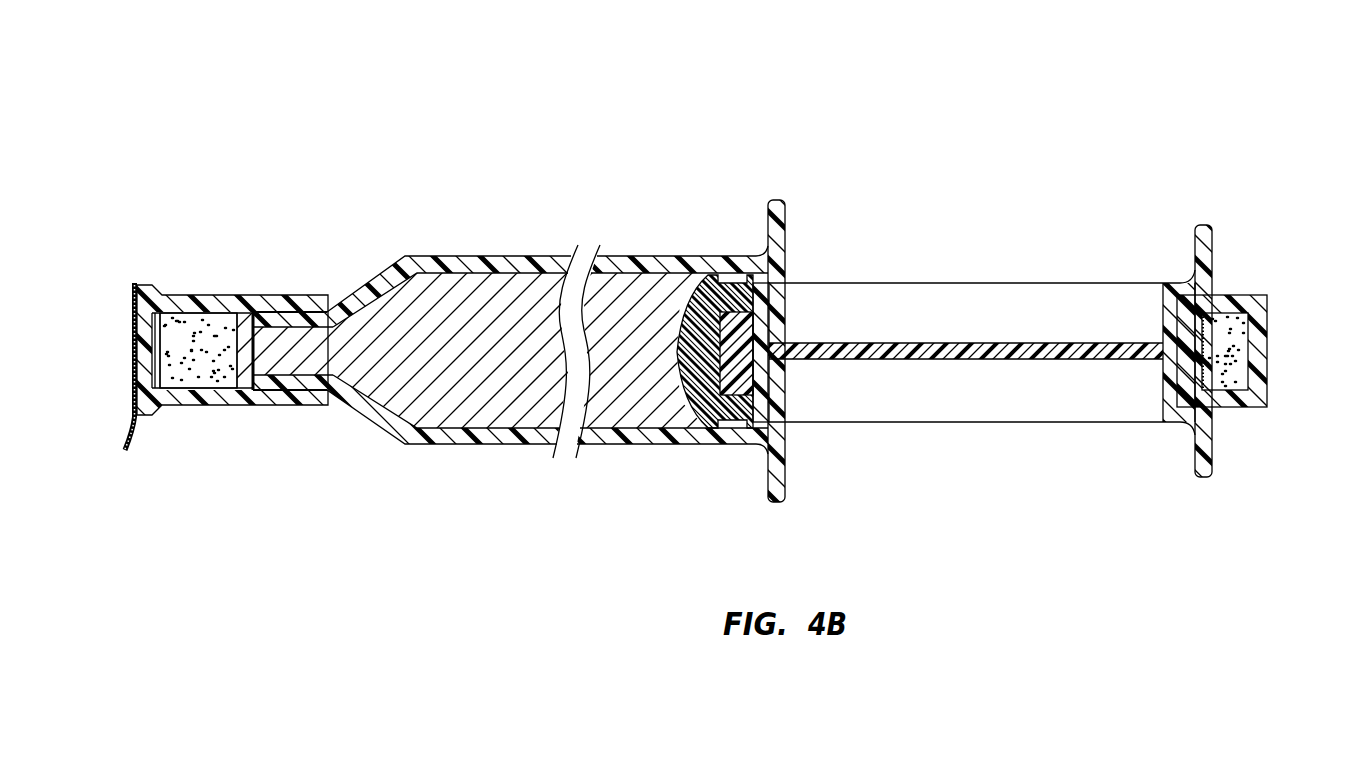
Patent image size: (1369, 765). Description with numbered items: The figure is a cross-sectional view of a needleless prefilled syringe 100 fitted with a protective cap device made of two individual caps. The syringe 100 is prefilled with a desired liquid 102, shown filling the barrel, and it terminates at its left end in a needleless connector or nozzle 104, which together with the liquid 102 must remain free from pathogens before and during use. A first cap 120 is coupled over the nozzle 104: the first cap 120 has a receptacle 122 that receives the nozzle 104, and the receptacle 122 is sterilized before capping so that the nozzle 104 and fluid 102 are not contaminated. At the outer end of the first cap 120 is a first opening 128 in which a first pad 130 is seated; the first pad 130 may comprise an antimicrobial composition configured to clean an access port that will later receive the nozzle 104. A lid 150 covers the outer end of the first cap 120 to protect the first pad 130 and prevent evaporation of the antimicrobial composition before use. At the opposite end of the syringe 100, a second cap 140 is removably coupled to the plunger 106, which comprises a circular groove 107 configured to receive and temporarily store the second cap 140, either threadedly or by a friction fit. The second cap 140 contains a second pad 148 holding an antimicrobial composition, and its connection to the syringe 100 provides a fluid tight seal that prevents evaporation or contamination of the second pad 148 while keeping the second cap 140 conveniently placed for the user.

The prefilled syringe 100 is at (785, 222).
The liquid 102 is at (484, 300).
The nozzle 104 is at (287, 383).
The plunger 106 is at (1213, 260).
The circular groove 107 is at (1165, 400).
The first cap 120 is at (227, 308).
The receptacle 122 is at (283, 325).
The first opening 128 is at (180, 310).
The first pad 130 is at (207, 380).
The second cap 140 is at (1262, 322).
The second pad 148 is at (1225, 363).
The lid 150 is at (131, 381).